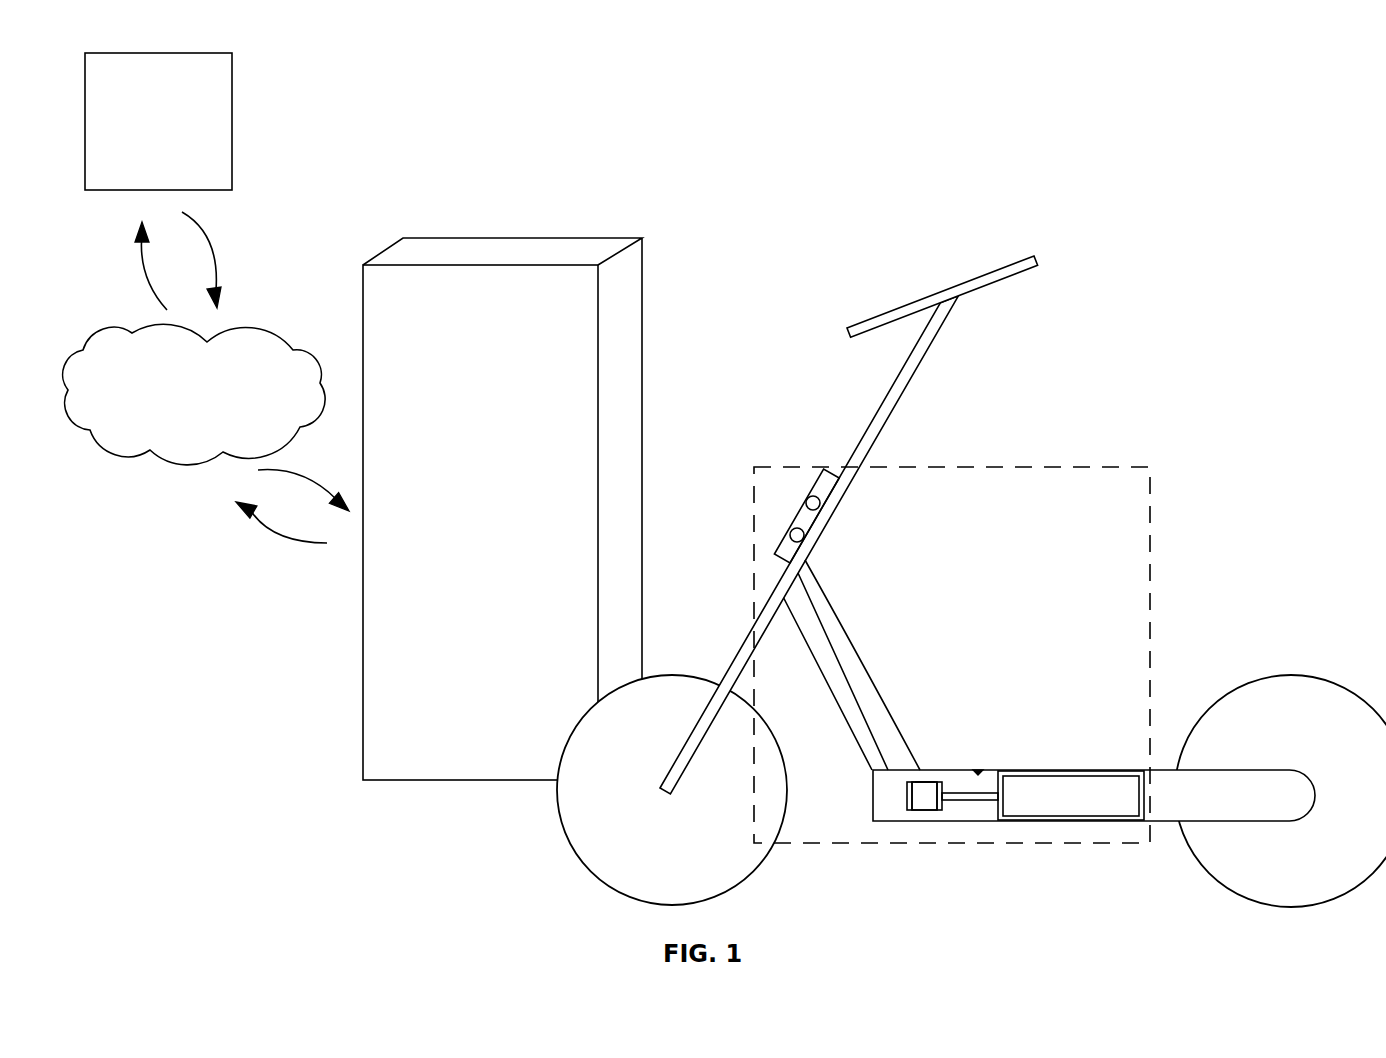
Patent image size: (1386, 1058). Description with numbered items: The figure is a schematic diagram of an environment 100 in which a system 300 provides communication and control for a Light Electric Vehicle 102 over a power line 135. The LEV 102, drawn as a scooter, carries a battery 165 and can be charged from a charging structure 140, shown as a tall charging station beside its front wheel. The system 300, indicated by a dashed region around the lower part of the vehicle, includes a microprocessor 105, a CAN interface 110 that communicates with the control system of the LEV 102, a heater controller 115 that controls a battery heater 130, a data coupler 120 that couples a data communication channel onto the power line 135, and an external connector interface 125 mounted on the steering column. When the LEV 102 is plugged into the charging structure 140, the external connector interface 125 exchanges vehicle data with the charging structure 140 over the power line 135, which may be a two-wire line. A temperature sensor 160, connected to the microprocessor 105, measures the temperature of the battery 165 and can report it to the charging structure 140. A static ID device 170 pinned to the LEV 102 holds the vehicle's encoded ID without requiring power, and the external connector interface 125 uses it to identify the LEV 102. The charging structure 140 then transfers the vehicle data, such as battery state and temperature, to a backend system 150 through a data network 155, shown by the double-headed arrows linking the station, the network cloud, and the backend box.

The environment 100 is at (1322, 112).
The Light Electric Vehicle 102 is at (733, 672).
The microprocessor 105 is at (923, 798).
The CAN interface 110 is at (902, 797).
The heater controller 115 is at (940, 802).
The data coupler 120 is at (925, 783).
The external connector interface 125 is at (827, 487).
The battery heater 130 is at (1060, 820).
The power line 135 is at (848, 620).
The charging structure 140 is at (588, 237).
The backend system 150 is at (158, 121).
The data network 155 is at (194, 394).
The temperature sensor 160 is at (1012, 778).
The battery 165 is at (1108, 805).
The static ID device 170 is at (978, 770).
The system 300 is at (1152, 583).